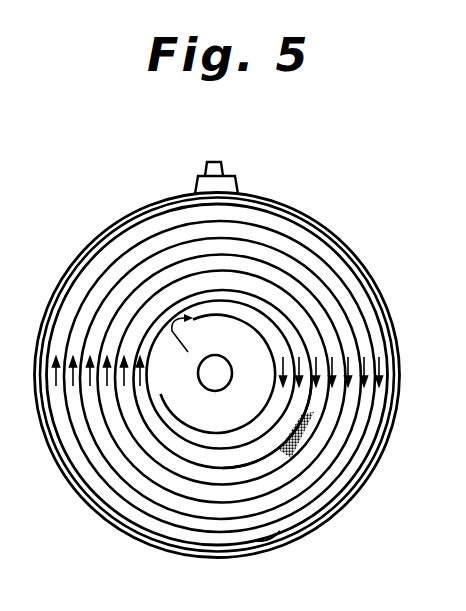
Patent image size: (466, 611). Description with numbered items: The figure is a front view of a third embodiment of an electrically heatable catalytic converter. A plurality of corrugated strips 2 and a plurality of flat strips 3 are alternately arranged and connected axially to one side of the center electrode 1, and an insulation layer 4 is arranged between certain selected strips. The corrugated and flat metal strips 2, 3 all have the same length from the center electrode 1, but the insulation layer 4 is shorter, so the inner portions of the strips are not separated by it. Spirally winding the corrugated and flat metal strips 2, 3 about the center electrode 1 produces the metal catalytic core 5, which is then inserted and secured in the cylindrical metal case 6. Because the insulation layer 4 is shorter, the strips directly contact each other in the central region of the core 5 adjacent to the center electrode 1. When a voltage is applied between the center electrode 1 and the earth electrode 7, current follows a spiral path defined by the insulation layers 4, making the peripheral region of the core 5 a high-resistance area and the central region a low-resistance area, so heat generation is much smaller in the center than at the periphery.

The center electrode 1 is at (222, 368).
The corrugated strips 2 is at (310, 418).
The flat strips 3 is at (287, 455).
The insulation layer 4 is at (112, 500).
The metal catalytic core 5 is at (113, 277).
The cylindrical metal case 6 is at (133, 538).
The earth electrode 7 is at (227, 165).